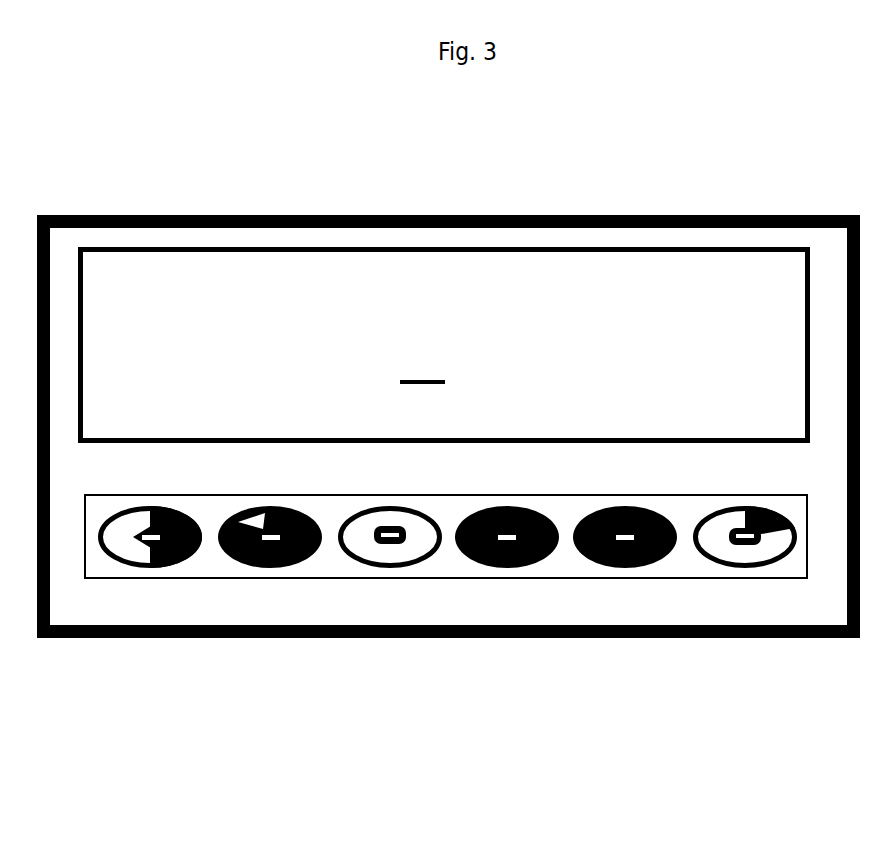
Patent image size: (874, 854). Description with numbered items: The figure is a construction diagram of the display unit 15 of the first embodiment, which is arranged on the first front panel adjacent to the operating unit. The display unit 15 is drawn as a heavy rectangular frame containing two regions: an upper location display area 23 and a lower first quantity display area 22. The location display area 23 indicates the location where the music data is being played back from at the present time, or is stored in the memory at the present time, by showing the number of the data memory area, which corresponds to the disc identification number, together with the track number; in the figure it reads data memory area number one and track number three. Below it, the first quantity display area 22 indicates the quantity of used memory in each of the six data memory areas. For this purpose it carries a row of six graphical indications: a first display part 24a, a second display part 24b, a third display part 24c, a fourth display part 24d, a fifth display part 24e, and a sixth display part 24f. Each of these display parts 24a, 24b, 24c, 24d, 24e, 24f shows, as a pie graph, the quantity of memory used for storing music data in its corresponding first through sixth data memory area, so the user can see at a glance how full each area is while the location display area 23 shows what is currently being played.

The display unit 15 is at (612, 208).
The location display area 23 is at (330, 247).
The first quantity display area 22 is at (443, 664).
The first display part 24a is at (155, 588).
The second display part 24b is at (275, 588).
The third display part 24c is at (385, 588).
The fourth display part 24d is at (503, 588).
The fifth display part 24e is at (623, 588).
The sixth display part 24f is at (740, 611).